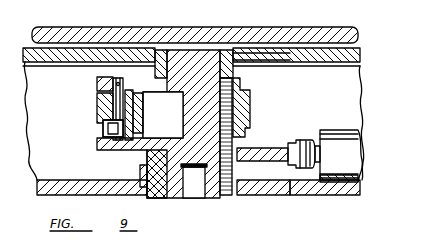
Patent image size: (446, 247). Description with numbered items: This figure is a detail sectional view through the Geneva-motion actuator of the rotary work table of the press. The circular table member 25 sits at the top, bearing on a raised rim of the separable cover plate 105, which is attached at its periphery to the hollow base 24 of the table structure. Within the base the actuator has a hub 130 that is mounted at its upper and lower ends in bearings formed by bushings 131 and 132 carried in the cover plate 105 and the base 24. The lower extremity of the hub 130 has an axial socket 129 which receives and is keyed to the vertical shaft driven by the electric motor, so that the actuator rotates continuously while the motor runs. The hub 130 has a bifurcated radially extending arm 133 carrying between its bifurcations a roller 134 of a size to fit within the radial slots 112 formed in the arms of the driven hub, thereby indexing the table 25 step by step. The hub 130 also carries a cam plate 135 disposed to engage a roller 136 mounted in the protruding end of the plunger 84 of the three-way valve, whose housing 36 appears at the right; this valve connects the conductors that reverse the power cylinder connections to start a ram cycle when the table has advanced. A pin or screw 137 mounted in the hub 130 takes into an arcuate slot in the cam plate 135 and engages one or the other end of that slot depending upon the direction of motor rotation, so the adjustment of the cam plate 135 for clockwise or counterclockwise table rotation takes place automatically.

The circular table member 25 is at (338, 30).
The cover plate 105 is at (360, 63).
The hollow base 24 is at (355, 192).
The plunger 84 is at (318, 143).
The housing 36 is at (355, 152).
The roller 136 is at (298, 148).
The cam plate 135 is at (250, 150).
The bushing 132 is at (237, 179).
The axial socket 129 is at (198, 196).
The hub 130 is at (188, 118).
The bushing 131 is at (233, 68).
The pin or screw 137 is at (240, 116).
The bifurcated radially extending arm 133 is at (97, 82).
The radial slots 112 is at (105, 108).
The roller 134 is at (106, 131).